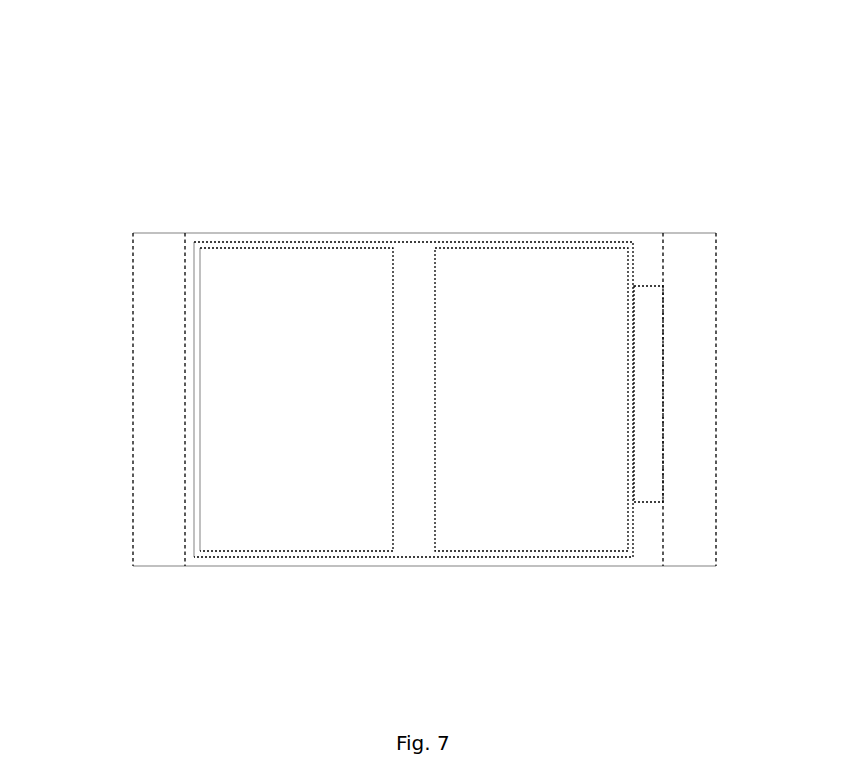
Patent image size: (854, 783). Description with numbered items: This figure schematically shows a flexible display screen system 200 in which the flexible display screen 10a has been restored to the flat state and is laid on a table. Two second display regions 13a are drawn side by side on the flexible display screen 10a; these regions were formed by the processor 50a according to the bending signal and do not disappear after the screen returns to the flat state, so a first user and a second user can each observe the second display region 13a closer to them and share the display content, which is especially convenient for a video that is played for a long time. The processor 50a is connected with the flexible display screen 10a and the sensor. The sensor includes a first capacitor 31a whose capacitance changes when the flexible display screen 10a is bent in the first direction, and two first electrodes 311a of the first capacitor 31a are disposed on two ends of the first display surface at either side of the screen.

The flexible display screen system 200 is at (70, 56).
The flexible display screen 10a is at (533, 229).
The second display region 13a is at (353, 265).
The processor 50a is at (648, 292).
The first capacitor 31a is at (150, 550).
The first electrodes 311a is at (160, 503).